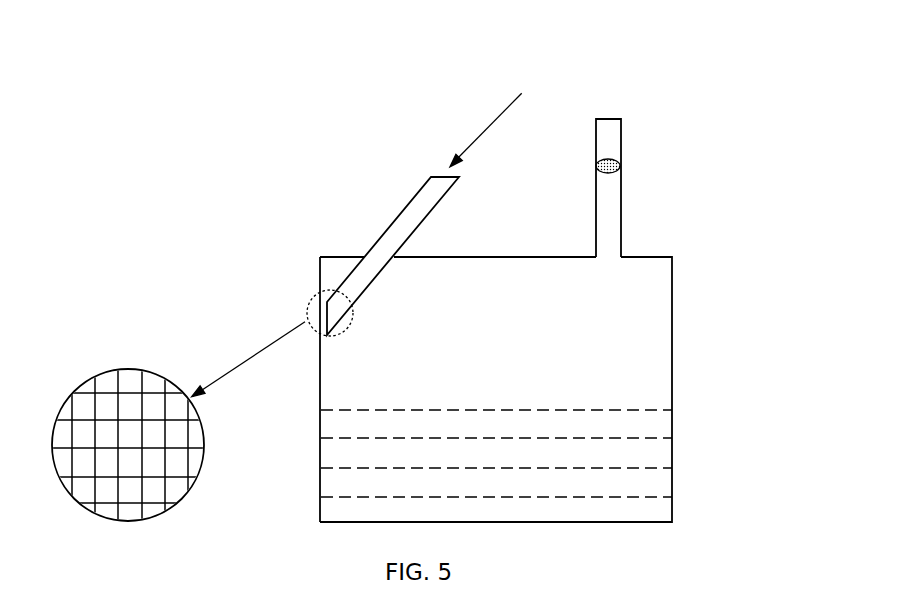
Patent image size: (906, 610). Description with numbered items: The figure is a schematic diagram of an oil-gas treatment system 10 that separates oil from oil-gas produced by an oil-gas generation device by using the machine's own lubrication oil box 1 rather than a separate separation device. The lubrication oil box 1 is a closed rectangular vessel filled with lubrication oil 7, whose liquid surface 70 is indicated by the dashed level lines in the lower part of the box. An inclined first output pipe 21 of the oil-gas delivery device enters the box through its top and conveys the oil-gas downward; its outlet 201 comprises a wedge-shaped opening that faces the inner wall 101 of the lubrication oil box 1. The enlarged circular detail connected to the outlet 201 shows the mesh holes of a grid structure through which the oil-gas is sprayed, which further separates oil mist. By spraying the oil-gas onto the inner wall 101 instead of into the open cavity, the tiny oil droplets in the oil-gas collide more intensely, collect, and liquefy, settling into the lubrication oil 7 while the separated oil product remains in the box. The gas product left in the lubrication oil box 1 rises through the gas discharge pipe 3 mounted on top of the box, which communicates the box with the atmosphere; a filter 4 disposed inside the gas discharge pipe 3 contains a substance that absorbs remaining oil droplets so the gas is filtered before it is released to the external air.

The oil-gas treatment system 10 is at (169, 88).
The lubrication oil box 1 is at (653, 354).
The inner wall 101 is at (317, 387).
The gas discharge pipe 3 is at (617, 202).
The filter 4 is at (621, 166).
The first output pipe 21 is at (407, 203).
The outlet 201 is at (326, 313).
The liquid surface 70 is at (603, 410).
The lubrication oil 7 is at (610, 438).